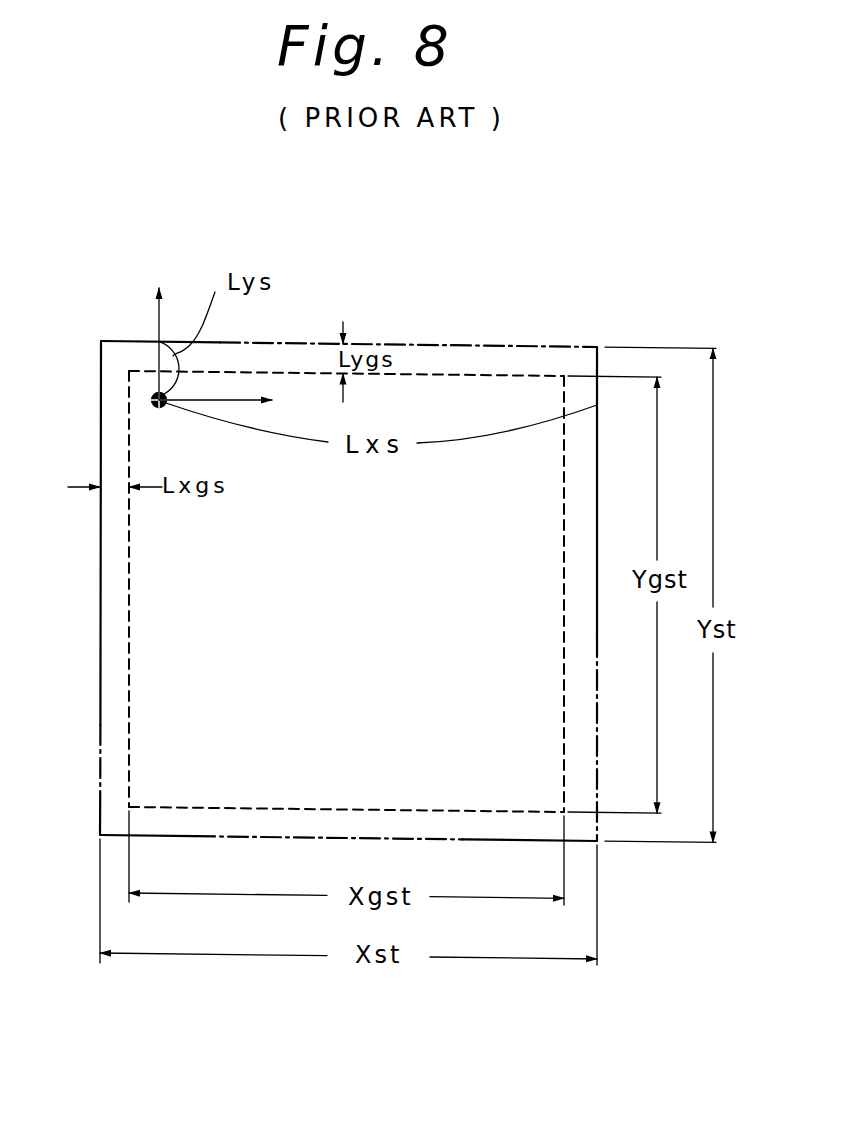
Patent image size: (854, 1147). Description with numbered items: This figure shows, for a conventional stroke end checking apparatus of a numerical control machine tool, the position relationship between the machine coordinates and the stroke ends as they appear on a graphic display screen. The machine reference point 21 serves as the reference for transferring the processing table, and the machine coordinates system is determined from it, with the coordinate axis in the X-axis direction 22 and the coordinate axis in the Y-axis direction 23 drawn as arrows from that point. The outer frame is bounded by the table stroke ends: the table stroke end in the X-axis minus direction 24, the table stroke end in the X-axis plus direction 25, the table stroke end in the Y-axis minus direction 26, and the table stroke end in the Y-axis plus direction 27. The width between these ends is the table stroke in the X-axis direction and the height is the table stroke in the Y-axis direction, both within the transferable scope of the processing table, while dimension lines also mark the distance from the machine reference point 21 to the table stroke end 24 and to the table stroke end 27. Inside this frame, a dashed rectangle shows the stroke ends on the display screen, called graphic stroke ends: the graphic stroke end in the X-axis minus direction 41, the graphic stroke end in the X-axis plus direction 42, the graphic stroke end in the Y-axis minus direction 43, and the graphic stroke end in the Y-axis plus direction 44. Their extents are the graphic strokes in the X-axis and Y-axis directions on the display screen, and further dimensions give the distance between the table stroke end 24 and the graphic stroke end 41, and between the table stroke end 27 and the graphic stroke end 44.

The machine reference point 21 is at (152, 400).
The coordinate axis in the X-axis direction 22 is at (232, 400).
The coordinate axis in the Y-axis direction 23 is at (159, 321).
The table stroke end in the X-axis minus direction 24 is at (101, 648).
The table stroke end in the X-axis plus direction 25 is at (597, 670).
The table stroke end in the Y-axis minus direction 26 is at (452, 839).
The table stroke end in the Y-axis plus direction 27 is at (450, 343).
The graphic stroke end in the X-axis minus direction 41 is at (129, 725).
The graphic stroke end in the X-axis plus direction 42 is at (564, 738).
The graphic stroke end in the Y-axis minus direction 43 is at (512, 812).
The graphic stroke end in the Y-axis plus direction 44 is at (520, 373).